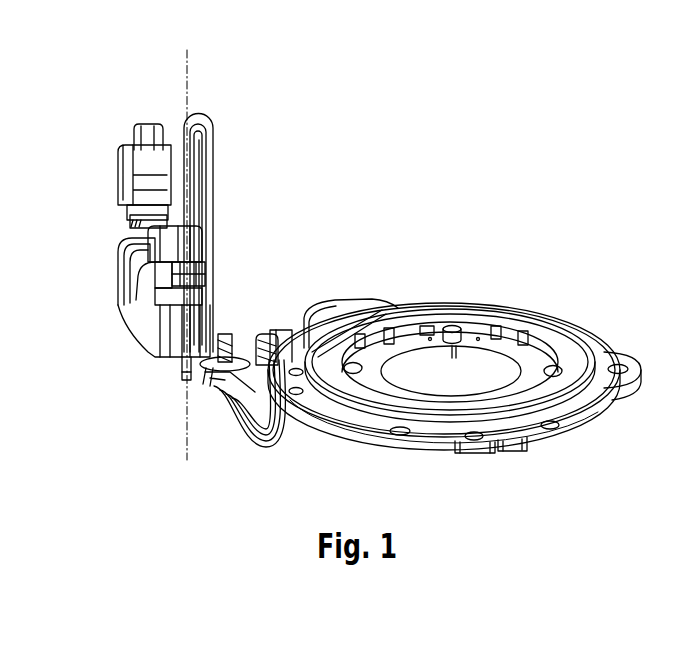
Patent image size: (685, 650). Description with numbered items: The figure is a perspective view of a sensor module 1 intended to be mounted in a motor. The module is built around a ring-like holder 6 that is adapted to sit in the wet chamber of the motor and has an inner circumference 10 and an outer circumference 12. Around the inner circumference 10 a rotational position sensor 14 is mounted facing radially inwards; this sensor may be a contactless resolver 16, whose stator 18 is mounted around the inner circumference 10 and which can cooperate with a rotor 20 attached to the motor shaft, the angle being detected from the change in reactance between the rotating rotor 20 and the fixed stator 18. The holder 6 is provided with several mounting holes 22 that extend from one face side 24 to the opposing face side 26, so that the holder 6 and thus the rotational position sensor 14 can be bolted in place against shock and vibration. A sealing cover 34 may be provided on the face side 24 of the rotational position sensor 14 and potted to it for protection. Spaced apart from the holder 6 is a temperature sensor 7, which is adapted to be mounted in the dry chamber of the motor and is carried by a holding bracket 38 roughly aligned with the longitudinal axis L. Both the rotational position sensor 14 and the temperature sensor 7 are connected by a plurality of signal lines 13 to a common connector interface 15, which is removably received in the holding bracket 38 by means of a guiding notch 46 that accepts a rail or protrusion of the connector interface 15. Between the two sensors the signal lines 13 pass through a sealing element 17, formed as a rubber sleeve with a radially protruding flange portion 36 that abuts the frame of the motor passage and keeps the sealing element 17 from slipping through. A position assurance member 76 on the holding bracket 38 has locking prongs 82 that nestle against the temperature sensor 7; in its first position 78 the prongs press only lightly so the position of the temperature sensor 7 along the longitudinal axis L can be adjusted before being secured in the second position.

The sensor module 1 is at (128, 95).
The longitudinal axis L is at (183, 413).
The signal lines 13 is at (217, 181).
The connector interface 15 is at (132, 147).
The guiding notch 46 is at (113, 160).
The first position 78 is at (201, 240).
The locking prong 82 is at (204, 274).
The position assurance member 76 is at (167, 250).
The holding bracket 38 is at (148, 313).
The temperature sensor 7 is at (180, 369).
The sealing element 17 is at (257, 352).
The flange portion 36 is at (265, 340).
The sealing cover 34 is at (304, 324).
The outer circumference 12 is at (370, 438).
The mounting holes 22 is at (483, 441).
The holder 6 is at (512, 431).
The face side 24 is at (603, 354).
The opposing face side 26 is at (604, 421).
The inner circumference 10 is at (522, 342).
The rotor 20 is at (467, 339).
The rotational position sensor 14 is at (397, 331).
The resolver 16 is at (425, 322).
The stator 18 is at (492, 322).